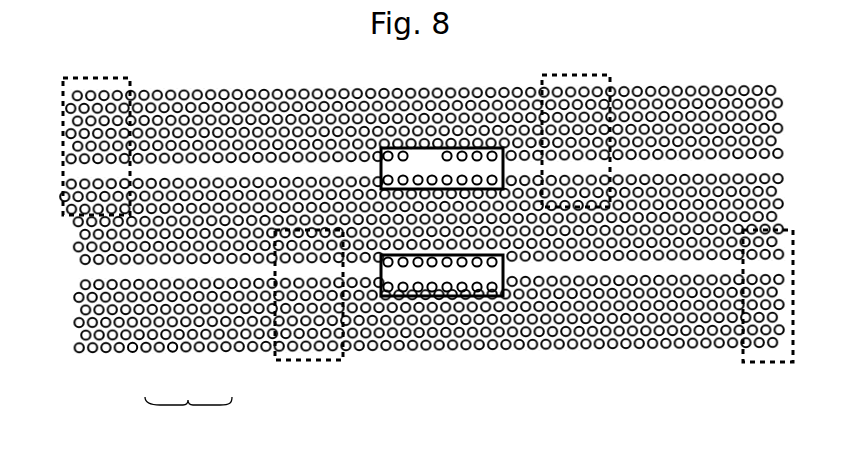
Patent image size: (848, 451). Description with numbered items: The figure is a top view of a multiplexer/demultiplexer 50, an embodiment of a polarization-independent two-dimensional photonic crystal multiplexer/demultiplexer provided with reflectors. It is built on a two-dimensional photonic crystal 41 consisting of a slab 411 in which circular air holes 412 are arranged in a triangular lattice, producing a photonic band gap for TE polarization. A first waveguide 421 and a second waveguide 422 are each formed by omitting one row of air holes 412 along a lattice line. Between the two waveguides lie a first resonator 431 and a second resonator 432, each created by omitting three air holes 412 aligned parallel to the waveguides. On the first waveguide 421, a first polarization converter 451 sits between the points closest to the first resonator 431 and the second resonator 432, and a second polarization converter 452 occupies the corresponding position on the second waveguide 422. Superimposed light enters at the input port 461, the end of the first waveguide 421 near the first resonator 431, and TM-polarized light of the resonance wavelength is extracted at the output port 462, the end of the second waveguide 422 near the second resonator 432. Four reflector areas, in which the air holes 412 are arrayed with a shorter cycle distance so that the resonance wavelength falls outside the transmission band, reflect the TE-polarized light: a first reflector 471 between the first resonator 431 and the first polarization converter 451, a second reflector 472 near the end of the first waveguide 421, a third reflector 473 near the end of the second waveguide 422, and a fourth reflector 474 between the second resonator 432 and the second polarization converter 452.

The multiplexer/demultiplexer 50 is at (776, 414).
The two-dimensional photonic crystal 41 is at (188, 413).
The slab 411 is at (128, 352).
The air holes 412 is at (177, 351).
The first waveguide 421 is at (540, 268).
The second waveguide 422 is at (328, 170).
The first resonator 431 is at (210, 220).
The second resonator 432 is at (667, 220).
The first polarization converter 451 is at (482, 283).
The second polarization converter 452 is at (480, 160).
The input port 461 is at (62, 268).
The output port 462 is at (787, 167).
The first reflector 471 is at (345, 270).
The second reflector 472 is at (743, 280).
The third reflector 473 is at (130, 160).
The fourth reflector 474 is at (625, 145).